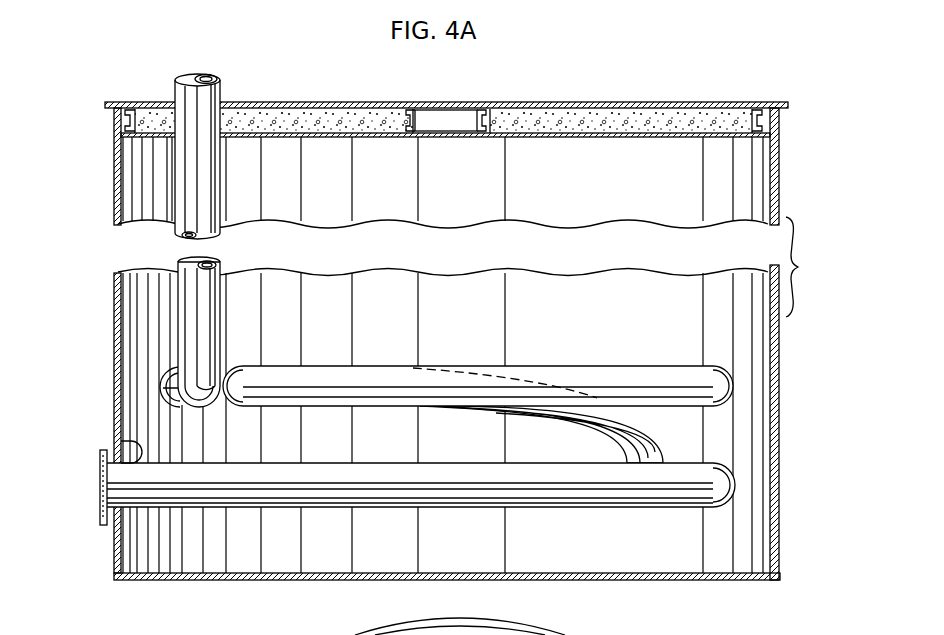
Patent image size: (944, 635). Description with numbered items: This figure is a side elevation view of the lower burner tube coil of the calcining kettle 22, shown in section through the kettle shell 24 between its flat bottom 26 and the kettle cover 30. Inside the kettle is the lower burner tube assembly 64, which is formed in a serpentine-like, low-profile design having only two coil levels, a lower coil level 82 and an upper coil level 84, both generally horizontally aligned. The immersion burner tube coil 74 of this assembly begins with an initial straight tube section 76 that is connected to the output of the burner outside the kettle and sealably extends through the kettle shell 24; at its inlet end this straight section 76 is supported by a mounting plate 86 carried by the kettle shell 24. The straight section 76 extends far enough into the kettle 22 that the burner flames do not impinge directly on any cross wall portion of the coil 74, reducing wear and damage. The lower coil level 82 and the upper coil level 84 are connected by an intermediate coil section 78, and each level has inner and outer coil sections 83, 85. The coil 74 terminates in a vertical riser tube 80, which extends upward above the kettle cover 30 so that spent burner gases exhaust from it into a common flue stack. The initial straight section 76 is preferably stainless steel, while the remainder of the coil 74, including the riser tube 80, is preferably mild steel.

The calcining kettle 22 is at (783, 408).
The kettle shell 24 is at (778, 189).
The flat bottom 26 is at (710, 581).
The kettle cover 30 is at (634, 118).
The lower burner tube assembly 64 is at (539, 381).
The immersion burner tube coil 74 is at (222, 516).
The initial tube section 76 is at (167, 508).
The intermediate coil section 78 is at (672, 445).
The vertical riser tube 80 is at (188, 177).
The lower coil level 82 is at (442, 536).
The inner coil section 83 is at (220, 408).
The upper coil level 84 is at (539, 368).
The outer coil section 85 is at (737, 382).
The mounting plate 86 is at (120, 441).